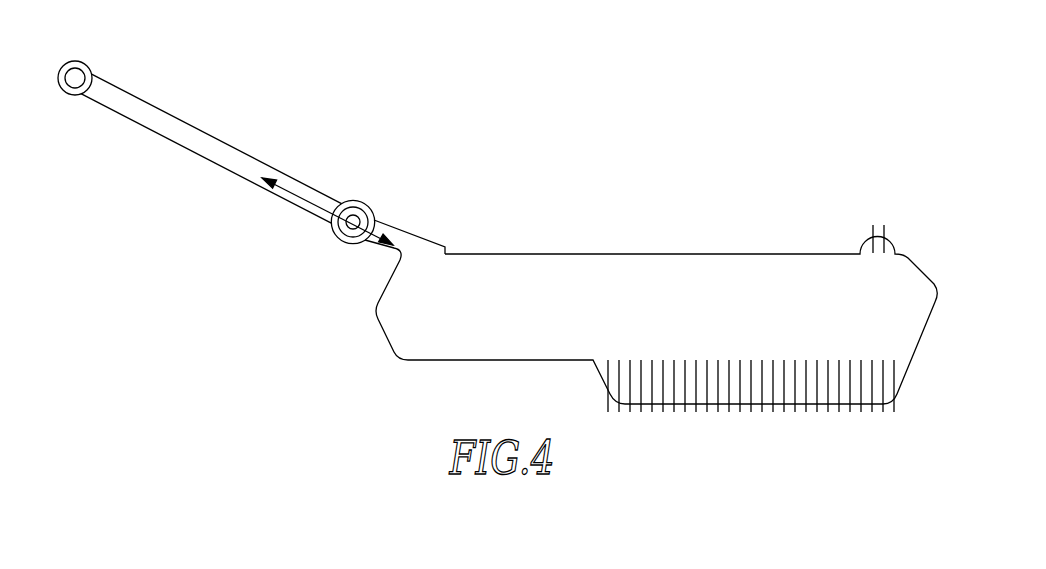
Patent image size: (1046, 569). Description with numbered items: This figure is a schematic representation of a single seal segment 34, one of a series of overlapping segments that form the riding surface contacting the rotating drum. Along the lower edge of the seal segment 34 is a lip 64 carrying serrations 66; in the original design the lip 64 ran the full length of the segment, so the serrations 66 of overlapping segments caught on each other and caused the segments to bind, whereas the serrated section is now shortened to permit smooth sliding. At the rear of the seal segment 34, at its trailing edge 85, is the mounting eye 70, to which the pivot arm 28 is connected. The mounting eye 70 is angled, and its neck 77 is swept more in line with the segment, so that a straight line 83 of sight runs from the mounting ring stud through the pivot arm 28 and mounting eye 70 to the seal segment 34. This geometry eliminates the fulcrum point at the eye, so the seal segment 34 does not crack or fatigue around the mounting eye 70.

The pivot arm 28 is at (182, 120).
The mounting eye 70 is at (363, 196).
The neck 77 is at (402, 236).
The straight line 83 is at (310, 206).
The trailing edge 85 is at (352, 264).
The seal segment 34 is at (551, 232).
The serrations 66 is at (686, 360).
The lip 64 is at (751, 400).